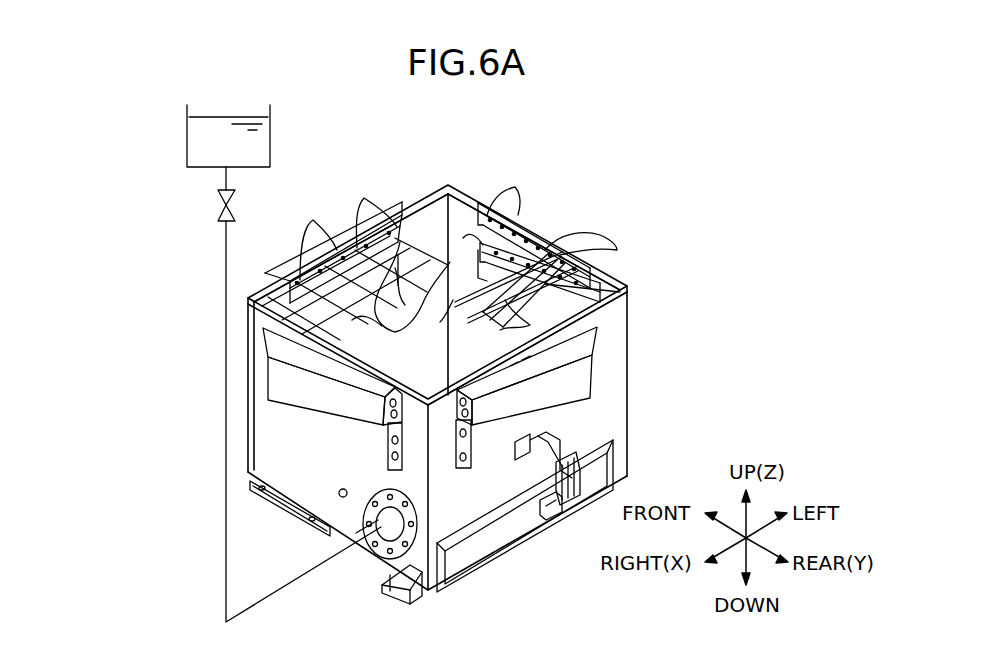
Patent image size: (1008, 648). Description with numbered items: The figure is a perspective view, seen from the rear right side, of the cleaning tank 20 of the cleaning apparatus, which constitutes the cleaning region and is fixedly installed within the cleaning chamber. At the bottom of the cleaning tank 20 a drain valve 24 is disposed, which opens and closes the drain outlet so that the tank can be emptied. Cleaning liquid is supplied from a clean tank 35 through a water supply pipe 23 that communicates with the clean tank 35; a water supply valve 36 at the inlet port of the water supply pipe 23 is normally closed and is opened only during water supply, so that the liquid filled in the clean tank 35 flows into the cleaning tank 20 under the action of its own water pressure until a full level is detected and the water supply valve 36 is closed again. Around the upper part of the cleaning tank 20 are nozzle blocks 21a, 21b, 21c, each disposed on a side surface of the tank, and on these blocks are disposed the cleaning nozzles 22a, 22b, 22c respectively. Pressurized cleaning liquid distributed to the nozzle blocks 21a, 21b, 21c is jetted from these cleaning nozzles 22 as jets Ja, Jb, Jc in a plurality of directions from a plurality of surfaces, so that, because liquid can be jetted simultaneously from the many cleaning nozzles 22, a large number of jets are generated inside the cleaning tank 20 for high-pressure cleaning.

The cleaning tank 20 is at (627, 418).
The nozzle block 21a is at (482, 198).
The nozzle block 21b is at (401, 203).
The nozzle block 21c is at (590, 320).
The cleaning nozzles 22 is at (378, 259).
The cleaning nozzles 22a is at (508, 212).
The cleaning nozzles 22b is at (333, 238).
The cleaning nozzles 22c is at (510, 300).
The water supply pipe 23 is at (222, 429).
The drain valve 24 is at (505, 538).
The clean tank 35 is at (270, 150).
The water supply valve 36 is at (212, 206).
The jet Ja is at (646, 294).
The jet Jb is at (401, 301).
The jet Jc is at (530, 322).